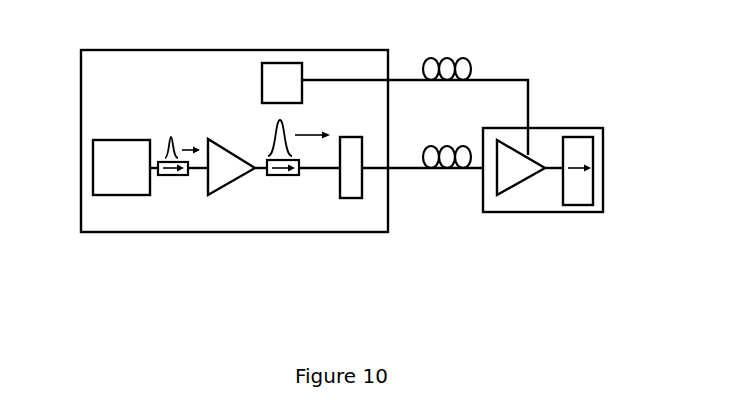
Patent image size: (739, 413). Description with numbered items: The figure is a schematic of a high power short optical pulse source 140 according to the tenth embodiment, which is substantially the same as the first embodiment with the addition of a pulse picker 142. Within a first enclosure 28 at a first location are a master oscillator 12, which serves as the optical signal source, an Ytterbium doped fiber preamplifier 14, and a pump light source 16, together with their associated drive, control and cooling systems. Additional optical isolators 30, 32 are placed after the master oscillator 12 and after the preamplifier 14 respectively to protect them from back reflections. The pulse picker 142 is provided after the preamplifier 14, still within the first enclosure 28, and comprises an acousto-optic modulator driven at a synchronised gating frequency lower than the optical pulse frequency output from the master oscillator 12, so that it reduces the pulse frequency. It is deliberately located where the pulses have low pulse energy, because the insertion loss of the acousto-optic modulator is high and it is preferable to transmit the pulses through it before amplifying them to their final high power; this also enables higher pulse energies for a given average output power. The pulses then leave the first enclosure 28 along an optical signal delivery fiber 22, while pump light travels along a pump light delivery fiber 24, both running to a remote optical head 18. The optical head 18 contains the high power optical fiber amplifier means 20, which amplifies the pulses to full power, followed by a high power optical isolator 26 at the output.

The master oscillator 12 is at (120, 167).
The preamplifier 14 is at (228, 177).
The pump light source 16 is at (281, 83).
The optical head 18 is at (551, 128).
The high power optical fiber amplifier means 20 is at (517, 172).
The optical signal delivery fiber 22 is at (408, 170).
The pump light delivery fiber 24 is at (491, 80).
The high power optical isolator 26 is at (578, 205).
The first enclosure 28 is at (105, 233).
The optical isolator 30 is at (171, 176).
The optical isolator 32 is at (281, 176).
The high power short optical pulse source 140 is at (244, 277).
The pulse picker 142 is at (346, 190).